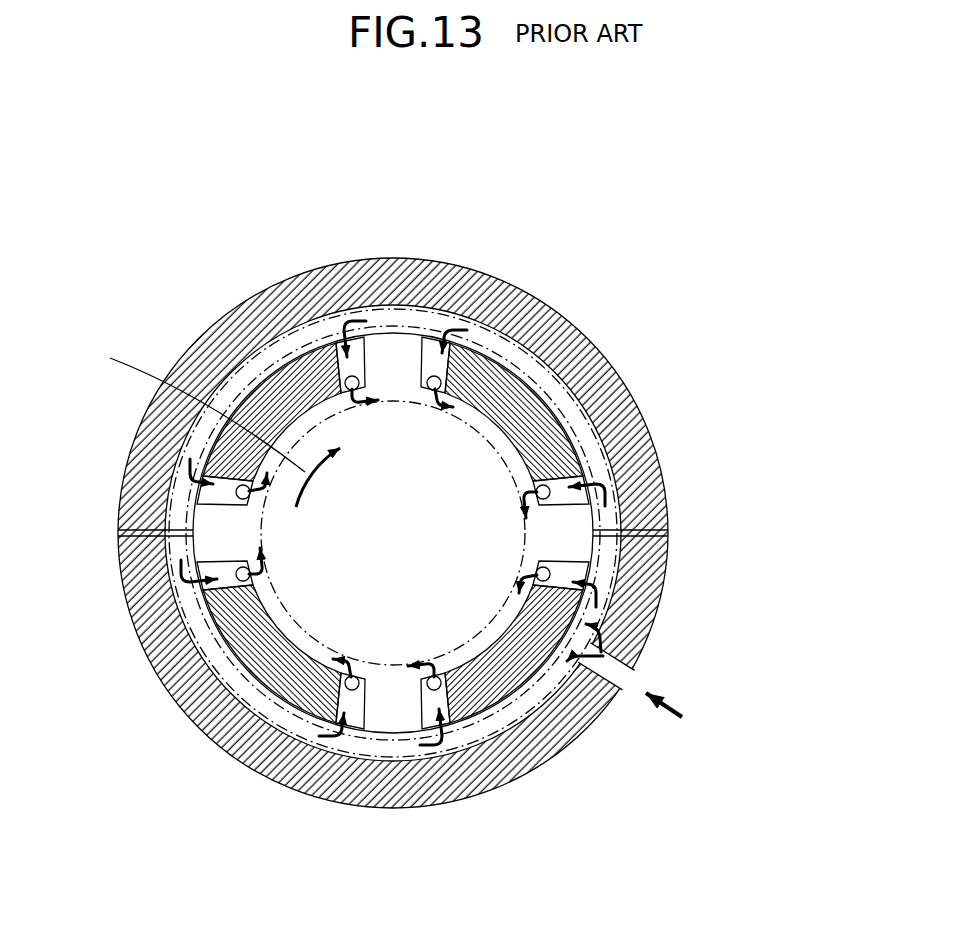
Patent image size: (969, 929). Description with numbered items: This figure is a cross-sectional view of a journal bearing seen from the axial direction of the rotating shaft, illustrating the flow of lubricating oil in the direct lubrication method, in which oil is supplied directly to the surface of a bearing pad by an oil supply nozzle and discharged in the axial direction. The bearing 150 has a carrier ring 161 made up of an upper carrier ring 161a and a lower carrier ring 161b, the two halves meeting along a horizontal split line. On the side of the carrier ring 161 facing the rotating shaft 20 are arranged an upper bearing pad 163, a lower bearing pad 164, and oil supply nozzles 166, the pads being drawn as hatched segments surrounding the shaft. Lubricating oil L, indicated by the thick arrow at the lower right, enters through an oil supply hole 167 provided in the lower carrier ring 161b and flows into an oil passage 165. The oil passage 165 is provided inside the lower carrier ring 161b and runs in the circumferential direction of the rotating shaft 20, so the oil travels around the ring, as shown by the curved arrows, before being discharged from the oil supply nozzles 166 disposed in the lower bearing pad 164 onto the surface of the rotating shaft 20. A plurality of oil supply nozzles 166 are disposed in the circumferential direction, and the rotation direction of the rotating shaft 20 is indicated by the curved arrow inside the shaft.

The bearing 150 is at (181, 199).
The carrier ring 161 is at (704, 406).
The upper carrier ring 161a is at (318, 290).
The lower carrier ring 161b is at (440, 795).
The rotating shaft 20 is at (405, 430).
The upper bearing pad 163 is at (543, 428).
The lower bearing pad 164 is at (262, 667).
The oil passage 165 is at (515, 715).
The oil supply nozzles 166 is at (343, 713).
The oil supply hole 167 is at (630, 678).